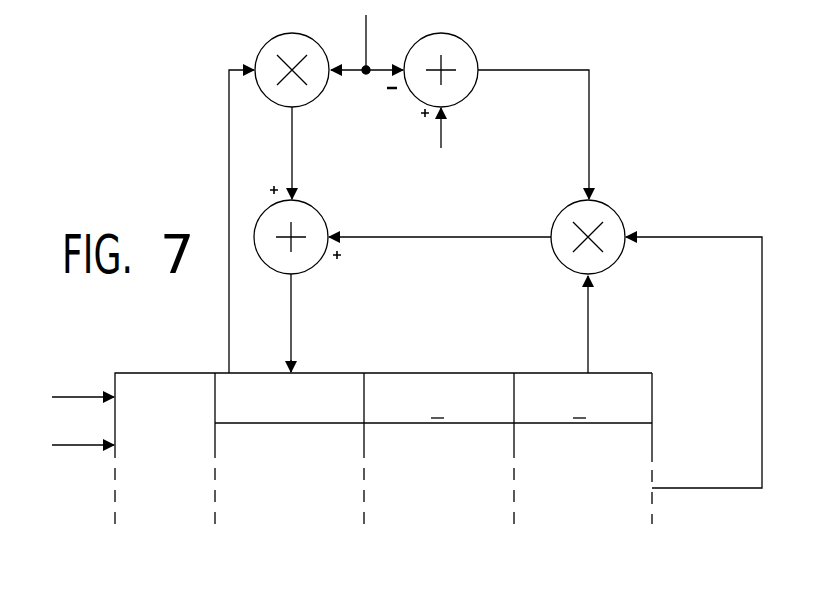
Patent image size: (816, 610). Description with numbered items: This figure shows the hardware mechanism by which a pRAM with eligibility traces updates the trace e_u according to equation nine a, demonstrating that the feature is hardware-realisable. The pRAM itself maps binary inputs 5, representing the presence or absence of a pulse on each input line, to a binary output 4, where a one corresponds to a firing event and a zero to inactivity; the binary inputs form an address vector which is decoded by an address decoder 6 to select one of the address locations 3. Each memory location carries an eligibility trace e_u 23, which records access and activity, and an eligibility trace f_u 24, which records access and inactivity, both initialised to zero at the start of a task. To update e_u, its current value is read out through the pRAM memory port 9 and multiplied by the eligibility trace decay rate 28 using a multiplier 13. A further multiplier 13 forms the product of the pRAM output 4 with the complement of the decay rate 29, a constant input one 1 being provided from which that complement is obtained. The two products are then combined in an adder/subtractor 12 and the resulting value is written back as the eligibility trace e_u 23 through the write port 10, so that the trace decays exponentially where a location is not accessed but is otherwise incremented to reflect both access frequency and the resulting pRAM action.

The constant input one 1 is at (455, 129).
The address locations 3 is at (258, 372).
The binary output 4 is at (762, 392).
The binary inputs 5 is at (70, 440).
The address decoder 6 is at (156, 372).
The pRAM memory port 9 is at (297, 371).
The write port 10 is at (228, 182).
The adder/subtractor 12 is at (452, 34).
The multiplier 13 is at (268, 38).
The eligibility trace e_u 23 is at (480, 373).
The eligibility trace f_u 24 is at (616, 373).
The eligibility trace decay rate 28 is at (365, 33).
The complement of the decay rate 29 is at (590, 120).